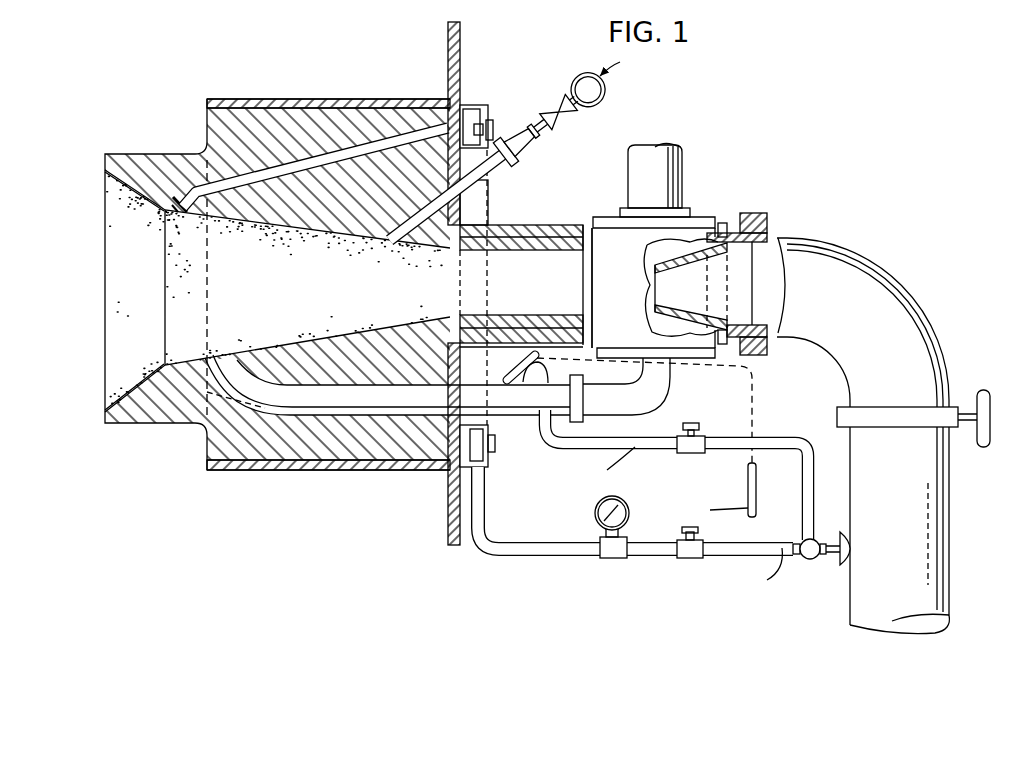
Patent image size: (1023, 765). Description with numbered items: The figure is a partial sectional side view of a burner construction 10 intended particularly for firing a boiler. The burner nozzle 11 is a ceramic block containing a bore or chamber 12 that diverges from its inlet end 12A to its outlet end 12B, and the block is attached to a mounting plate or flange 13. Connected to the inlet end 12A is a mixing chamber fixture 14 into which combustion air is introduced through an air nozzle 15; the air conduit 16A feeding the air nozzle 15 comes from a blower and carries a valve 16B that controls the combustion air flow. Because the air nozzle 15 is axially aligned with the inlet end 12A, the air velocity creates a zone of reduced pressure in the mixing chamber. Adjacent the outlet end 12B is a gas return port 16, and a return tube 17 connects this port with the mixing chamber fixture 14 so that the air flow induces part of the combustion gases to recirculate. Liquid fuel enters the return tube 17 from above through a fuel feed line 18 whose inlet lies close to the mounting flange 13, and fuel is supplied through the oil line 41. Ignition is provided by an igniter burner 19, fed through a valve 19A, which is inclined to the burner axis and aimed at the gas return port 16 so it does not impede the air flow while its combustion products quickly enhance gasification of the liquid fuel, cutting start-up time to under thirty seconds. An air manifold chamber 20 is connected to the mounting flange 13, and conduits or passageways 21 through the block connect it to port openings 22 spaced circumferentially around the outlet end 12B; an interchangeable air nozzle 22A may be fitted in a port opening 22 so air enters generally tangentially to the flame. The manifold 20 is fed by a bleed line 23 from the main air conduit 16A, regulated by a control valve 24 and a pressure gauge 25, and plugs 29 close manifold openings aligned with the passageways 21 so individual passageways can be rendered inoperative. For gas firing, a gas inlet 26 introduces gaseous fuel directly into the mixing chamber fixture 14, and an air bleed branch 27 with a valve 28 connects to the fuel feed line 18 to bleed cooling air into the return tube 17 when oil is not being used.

The burner construction 10 is at (537, 46).
The burner nozzle 11 is at (243, 112).
The bore or chamber 12 is at (170, 293).
The inlet end 12A is at (503, 257).
The outlet end 12B is at (120, 255).
The mounting plate or flange 13 is at (460, 43).
The mixing chamber fixture 14 is at (692, 228).
The air nozzle 15 is at (665, 278).
The gas return port 16 is at (233, 360).
The air conduit 16A is at (937, 565).
The valve 16B is at (877, 413).
The return tube 17 is at (510, 400).
The fuel feed line 18 is at (498, 343).
The igniter burner 19 is at (392, 248).
The valve 19A is at (578, 112).
The air manifold chamber 20 is at (465, 107).
The conduits or passageways 21 is at (303, 157).
The port openings 22 is at (172, 212).
The air nozzle 22A is at (168, 203).
The bleed line 23 is at (547, 555).
The control valve 24 is at (697, 558).
The pressure gauge 25 is at (597, 510).
The gas inlet 26 is at (673, 160).
The air bleed branch 27 is at (727, 440).
The valve 28 is at (697, 423).
The plugs 29 is at (493, 135).
The oil line 41 is at (748, 488).